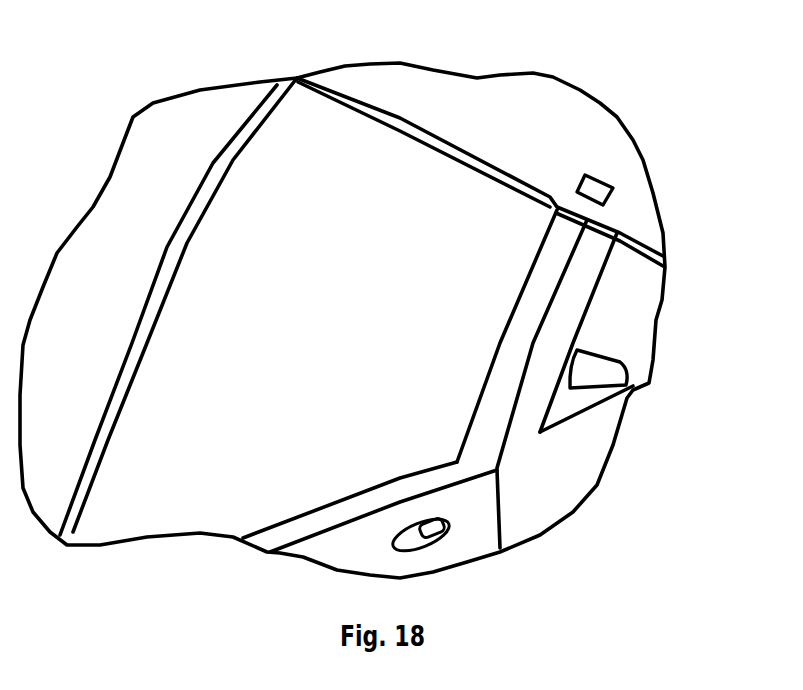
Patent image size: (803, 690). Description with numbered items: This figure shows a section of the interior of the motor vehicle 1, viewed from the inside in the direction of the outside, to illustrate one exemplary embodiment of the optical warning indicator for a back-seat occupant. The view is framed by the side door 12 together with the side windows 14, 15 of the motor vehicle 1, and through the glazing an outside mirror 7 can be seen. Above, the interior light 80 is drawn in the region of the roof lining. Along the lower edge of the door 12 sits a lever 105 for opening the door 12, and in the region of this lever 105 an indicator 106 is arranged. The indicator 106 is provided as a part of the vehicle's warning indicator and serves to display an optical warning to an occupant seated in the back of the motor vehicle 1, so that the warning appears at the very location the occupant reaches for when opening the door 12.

The motor vehicle 1 is at (553, 103).
The side window 15 is at (273, 163).
The side window 14 is at (637, 293).
The interior light 80 is at (603, 185).
The outside mirror 7 is at (603, 370).
The side door 12 is at (353, 553).
The lever 105 is at (405, 548).
The indicator 106 is at (447, 538).